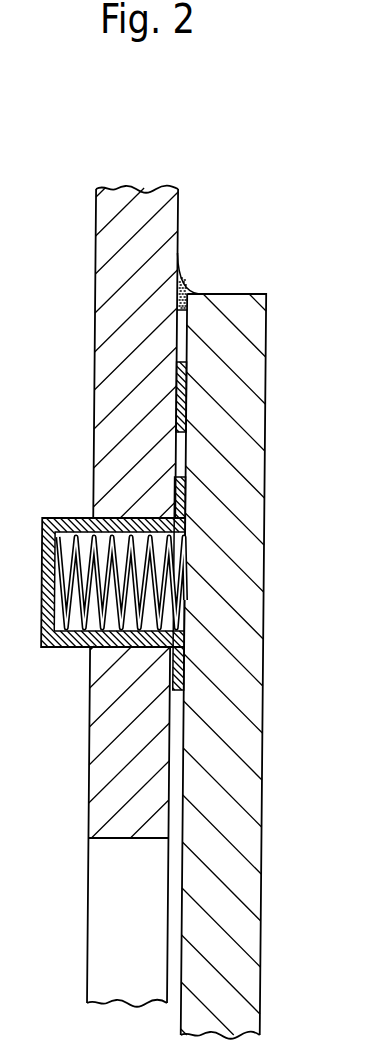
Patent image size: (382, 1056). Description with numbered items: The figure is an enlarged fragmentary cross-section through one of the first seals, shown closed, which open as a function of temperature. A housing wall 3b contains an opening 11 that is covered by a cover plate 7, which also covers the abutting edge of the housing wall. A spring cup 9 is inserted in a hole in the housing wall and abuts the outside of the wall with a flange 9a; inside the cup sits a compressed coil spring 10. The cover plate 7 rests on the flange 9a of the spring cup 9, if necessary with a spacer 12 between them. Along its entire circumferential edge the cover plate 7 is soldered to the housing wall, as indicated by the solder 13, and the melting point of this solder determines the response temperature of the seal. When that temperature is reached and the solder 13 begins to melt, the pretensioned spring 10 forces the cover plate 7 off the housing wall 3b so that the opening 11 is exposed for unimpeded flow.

The housing wall 3b is at (143, 213).
The cover plate 7 is at (248, 797).
The spring cup 9 is at (54, 518).
The flange 9a is at (193, 494).
The coil spring 10 is at (77, 626).
The opening 11 is at (126, 893).
The spacer 12 is at (192, 407).
The solder 13 is at (190, 283).